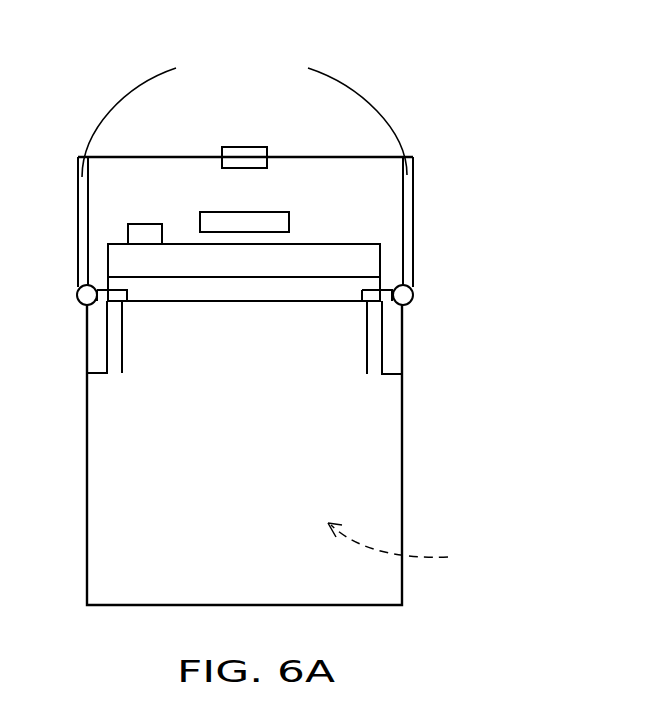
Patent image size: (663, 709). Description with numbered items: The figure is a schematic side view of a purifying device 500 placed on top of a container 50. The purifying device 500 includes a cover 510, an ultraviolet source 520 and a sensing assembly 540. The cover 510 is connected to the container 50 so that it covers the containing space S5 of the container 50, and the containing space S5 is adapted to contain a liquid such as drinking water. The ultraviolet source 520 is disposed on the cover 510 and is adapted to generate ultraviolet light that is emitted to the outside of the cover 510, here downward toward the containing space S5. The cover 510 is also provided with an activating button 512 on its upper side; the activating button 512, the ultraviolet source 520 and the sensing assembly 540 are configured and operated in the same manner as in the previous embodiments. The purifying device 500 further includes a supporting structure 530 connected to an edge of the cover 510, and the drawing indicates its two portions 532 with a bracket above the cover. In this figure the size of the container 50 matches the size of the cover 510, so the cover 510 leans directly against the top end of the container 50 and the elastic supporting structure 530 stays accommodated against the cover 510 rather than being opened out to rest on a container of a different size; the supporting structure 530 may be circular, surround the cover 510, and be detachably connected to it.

The purifying device 500 is at (444, 106).
The cover 510 is at (388, 212).
The activating button 512 is at (248, 157).
The ultraviolet source 520 is at (275, 224).
The supporting structure 530 is at (297, 54).
The driving arm 532 is at (244, 113).
The sensing assembly 540 is at (136, 237).
The container 50 is at (375, 443).
The containing space S5 is at (405, 549).